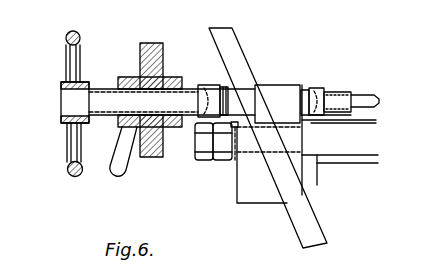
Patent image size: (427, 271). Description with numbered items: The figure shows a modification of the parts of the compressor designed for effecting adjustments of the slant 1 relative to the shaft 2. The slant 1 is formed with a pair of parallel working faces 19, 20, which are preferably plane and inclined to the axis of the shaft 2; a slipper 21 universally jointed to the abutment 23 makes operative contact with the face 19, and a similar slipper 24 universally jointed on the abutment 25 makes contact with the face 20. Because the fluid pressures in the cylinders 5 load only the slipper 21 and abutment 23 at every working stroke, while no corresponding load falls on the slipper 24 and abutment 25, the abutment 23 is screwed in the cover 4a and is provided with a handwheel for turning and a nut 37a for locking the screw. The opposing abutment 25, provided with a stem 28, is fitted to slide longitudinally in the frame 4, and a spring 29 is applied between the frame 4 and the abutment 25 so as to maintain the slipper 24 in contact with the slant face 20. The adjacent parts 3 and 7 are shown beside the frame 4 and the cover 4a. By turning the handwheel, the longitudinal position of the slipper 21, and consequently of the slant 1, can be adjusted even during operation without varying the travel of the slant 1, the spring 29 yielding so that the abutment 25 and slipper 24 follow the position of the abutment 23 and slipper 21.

The slant 1 is at (268, 138).
The shaft 2 is at (340, 137).
The plate 3 is at (347, 157).
The frame 4 is at (332, 172).
The cover 4a is at (153, 152).
The cylinders 5 is at (80, 35).
The flange 7 is at (122, 77).
The nut 37a is at (143, 78).
The working face 19 is at (237, 187).
The working face 20 is at (300, 113).
The slipper 21 is at (230, 96).
The abutment 23 is at (204, 85).
The slipper 24 is at (301, 88).
The abutment 25 is at (325, 90).
The stem 28 is at (352, 100).
The spring 29 is at (355, 111).